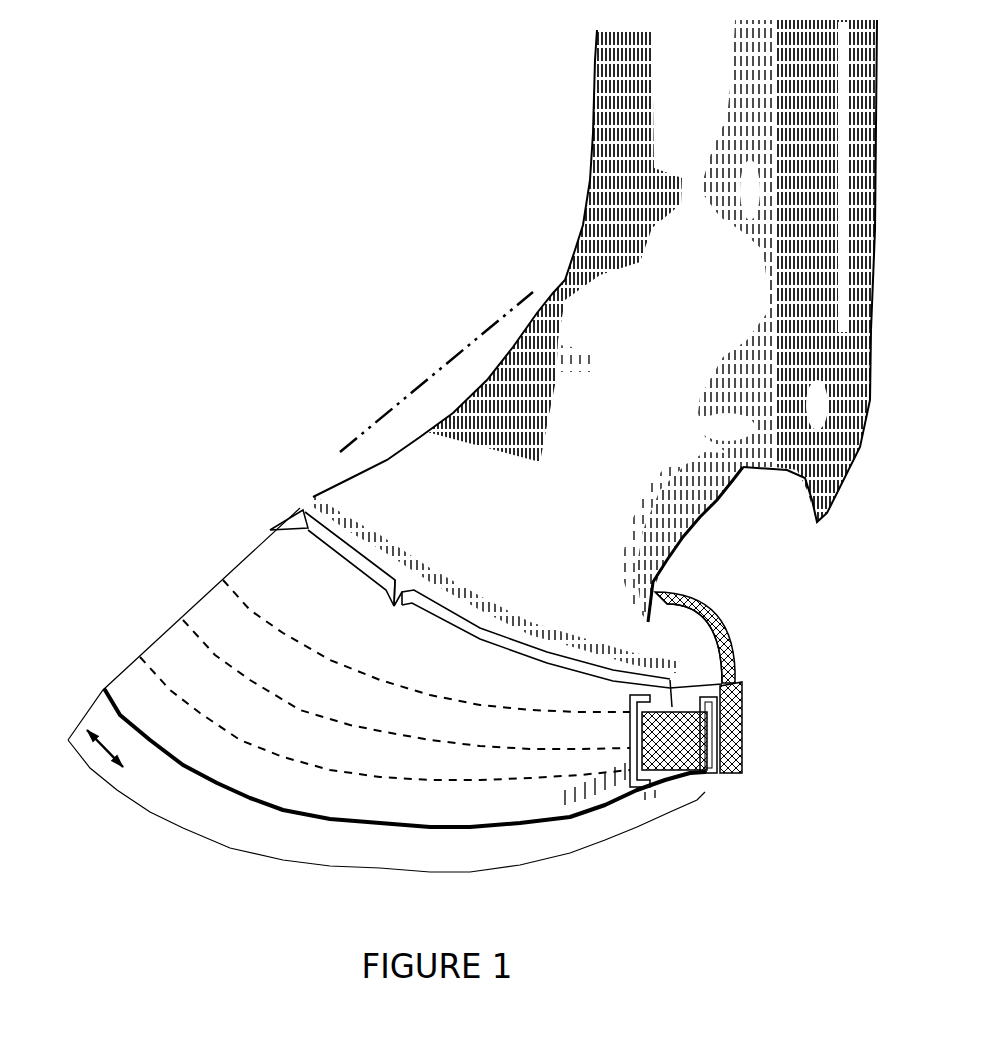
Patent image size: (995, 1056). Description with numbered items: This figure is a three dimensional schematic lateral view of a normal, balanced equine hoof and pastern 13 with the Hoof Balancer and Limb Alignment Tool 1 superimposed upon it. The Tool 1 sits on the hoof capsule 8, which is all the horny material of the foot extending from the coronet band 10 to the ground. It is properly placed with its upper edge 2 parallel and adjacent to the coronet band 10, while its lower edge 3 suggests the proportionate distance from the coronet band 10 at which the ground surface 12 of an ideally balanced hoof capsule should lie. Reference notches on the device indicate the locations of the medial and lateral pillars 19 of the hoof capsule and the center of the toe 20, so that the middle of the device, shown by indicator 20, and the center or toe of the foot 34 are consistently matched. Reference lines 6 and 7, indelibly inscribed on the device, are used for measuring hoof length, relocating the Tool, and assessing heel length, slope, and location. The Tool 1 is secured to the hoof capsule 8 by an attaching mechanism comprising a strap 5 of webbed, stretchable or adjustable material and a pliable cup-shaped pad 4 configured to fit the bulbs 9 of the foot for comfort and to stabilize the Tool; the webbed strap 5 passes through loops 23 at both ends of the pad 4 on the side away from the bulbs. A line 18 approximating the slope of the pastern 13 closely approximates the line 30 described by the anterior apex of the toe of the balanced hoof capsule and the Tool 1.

The Hoof Balancer and Limb Alignment Tool 1 is at (250, 713).
The upper edge 2 is at (337, 553).
The lower edge 3 is at (270, 802).
The pad 4 is at (735, 659).
The strap 5 is at (735, 713).
The reference line 6 is at (575, 782).
The reference line 7 is at (215, 660).
The hoof capsule 8 is at (213, 802).
The bulbs 9 is at (683, 640).
The coronet band 10 is at (320, 500).
The ground surface 12 is at (386, 833).
The pastern 13 is at (572, 461).
The line approximating the slope of the pastern 18 is at (427, 378).
The medial and lateral pillars 19 is at (393, 605).
The center of the toe 20 is at (287, 515).
The loops 23 is at (733, 763).
The line described by the anterior apex of the toe 30 is at (230, 560).
The center or toe of the foot 34 is at (105, 750).